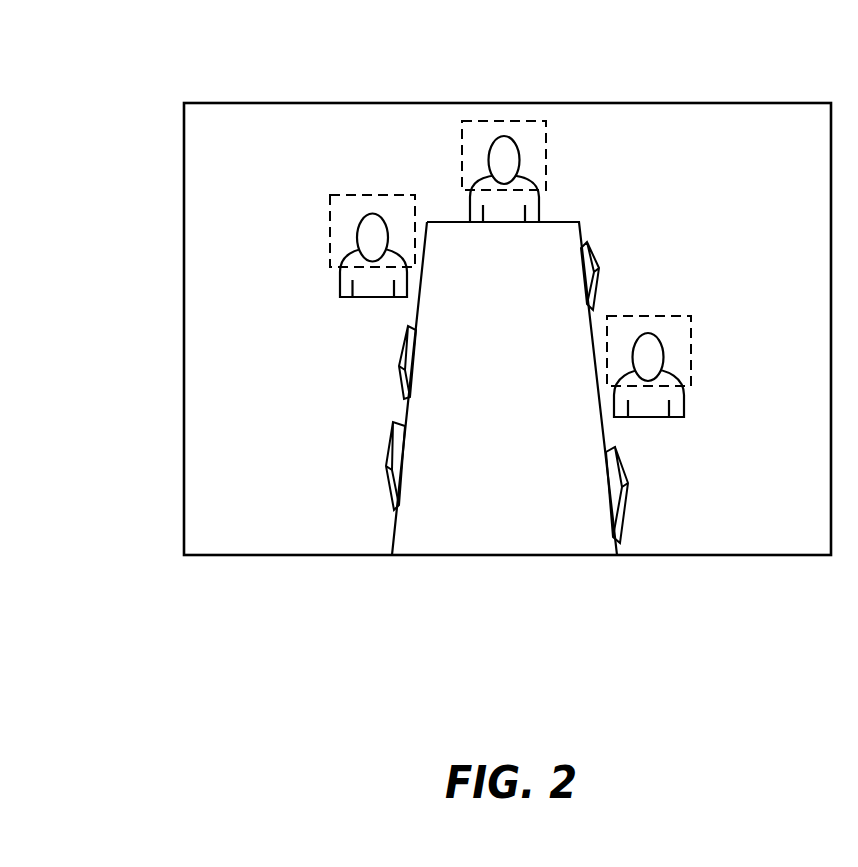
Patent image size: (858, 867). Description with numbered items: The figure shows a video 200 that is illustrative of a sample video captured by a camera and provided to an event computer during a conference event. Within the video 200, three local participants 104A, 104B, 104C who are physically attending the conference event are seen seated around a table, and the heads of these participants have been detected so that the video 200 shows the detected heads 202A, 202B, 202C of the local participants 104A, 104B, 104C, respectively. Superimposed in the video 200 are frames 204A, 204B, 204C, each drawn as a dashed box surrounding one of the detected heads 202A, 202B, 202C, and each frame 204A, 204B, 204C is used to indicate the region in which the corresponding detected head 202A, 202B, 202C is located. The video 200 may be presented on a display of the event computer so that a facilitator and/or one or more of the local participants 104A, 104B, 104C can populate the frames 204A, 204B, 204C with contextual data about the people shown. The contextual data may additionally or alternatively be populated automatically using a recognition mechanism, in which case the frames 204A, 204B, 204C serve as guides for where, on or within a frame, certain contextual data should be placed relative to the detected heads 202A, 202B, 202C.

The video 200 is at (151, 54).
The local participant 104A is at (316, 242).
The local participant 104B is at (562, 168).
The local participant 104C is at (706, 363).
The detected head 202A is at (357, 238).
The detected head 202B is at (520, 162).
The detected head 202C is at (663, 357).
The frame 204A is at (330, 198).
The frame 204B is at (546, 128).
The frame 204C is at (691, 320).